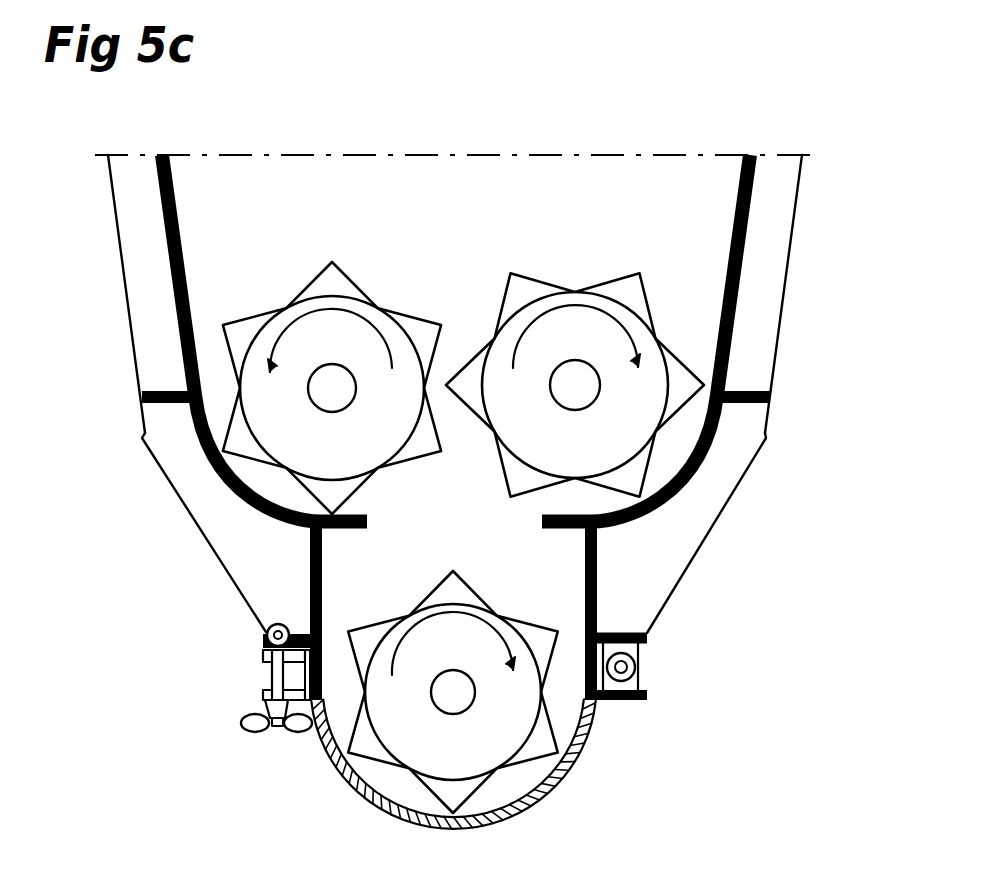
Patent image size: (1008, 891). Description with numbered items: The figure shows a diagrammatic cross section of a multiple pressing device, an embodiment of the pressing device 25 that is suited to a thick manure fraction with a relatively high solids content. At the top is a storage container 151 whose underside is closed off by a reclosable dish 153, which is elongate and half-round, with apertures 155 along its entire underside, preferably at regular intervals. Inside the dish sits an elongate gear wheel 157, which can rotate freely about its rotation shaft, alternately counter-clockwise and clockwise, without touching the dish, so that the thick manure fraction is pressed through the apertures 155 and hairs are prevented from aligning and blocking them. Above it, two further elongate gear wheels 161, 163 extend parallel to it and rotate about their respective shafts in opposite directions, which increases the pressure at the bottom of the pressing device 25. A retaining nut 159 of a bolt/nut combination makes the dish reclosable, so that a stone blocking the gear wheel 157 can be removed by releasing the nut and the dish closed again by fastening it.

The pressing device 25 is at (752, 495).
The storage container 151 is at (762, 283).
The reclosable dish 153 is at (577, 755).
The apertures 155 is at (488, 828).
The gear wheel 157 is at (397, 726).
The retaining nut 159 is at (262, 707).
The gear wheel 161 is at (366, 325).
The gear wheel 163 is at (585, 305).